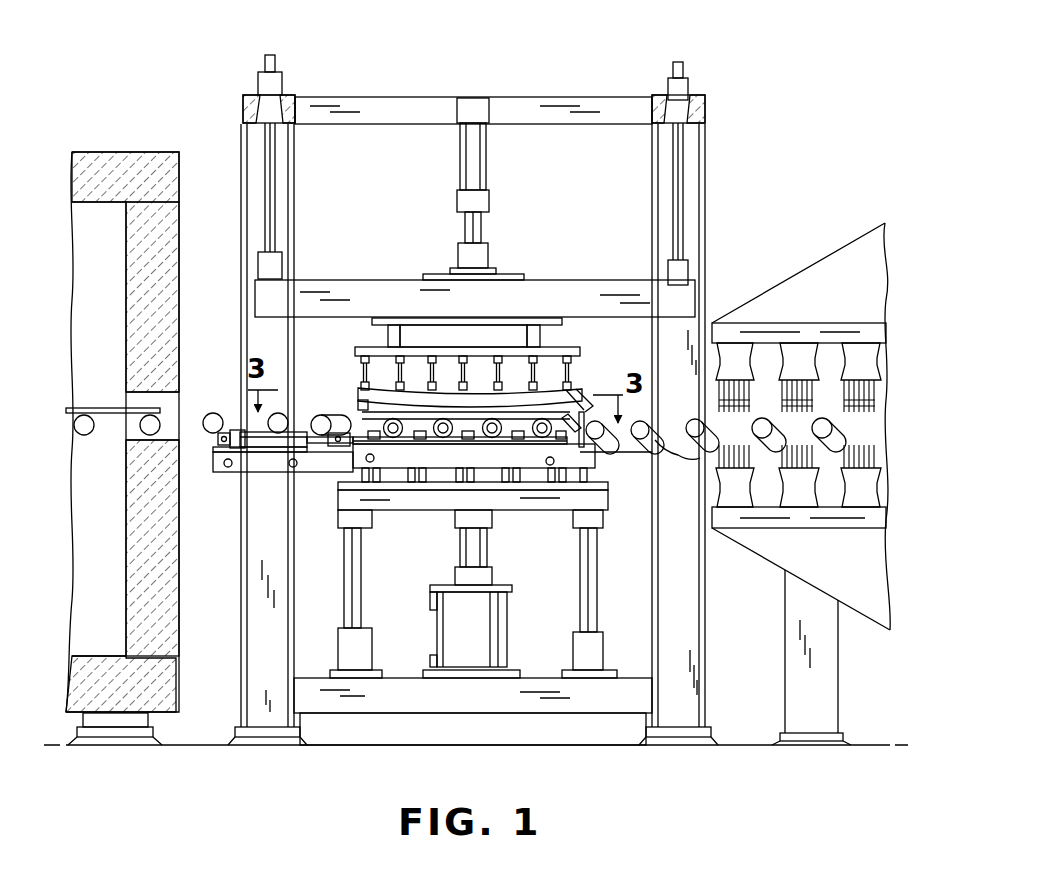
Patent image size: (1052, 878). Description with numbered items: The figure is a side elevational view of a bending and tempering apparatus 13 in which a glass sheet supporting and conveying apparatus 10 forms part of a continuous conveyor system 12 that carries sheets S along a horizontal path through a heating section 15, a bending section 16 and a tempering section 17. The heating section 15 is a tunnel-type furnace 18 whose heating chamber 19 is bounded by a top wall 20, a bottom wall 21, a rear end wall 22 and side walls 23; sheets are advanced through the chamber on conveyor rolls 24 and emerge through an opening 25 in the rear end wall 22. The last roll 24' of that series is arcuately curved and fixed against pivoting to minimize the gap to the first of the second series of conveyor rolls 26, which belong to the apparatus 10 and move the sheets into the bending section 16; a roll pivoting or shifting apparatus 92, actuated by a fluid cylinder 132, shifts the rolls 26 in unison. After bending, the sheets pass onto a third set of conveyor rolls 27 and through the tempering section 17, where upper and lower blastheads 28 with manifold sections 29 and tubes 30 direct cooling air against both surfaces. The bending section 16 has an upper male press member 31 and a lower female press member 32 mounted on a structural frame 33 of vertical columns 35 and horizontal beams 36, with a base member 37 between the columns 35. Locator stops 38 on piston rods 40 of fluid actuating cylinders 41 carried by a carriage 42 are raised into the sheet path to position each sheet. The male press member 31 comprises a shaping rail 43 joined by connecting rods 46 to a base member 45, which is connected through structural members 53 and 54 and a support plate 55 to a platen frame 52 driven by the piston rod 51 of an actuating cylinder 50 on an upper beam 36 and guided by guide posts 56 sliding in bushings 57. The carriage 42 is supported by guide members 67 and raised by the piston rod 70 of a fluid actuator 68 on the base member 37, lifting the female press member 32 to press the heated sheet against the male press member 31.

The glass sheet supporting and conveying apparatus 10 is at (393, 444).
The conveyor system 12 is at (308, 407).
The bending and tempering apparatus 13 is at (187, 63).
The heating section 15 is at (100, 113).
The bending section 16 is at (518, 62).
The tempering section 17 is at (834, 190).
The tunnel-type furnace 18 is at (124, 420).
The heating chamber 19 is at (85, 255).
The top wall 20 is at (110, 157).
The bottom wall 21 is at (77, 690).
The rear end wall 22 is at (172, 245).
The side walls 23 is at (112, 590).
The conveyor rolls 24 is at (181, 429).
The last roll 24' is at (327, 380).
The opening 25 is at (173, 430).
The conveyor rolls 26 is at (420, 420).
The conveyor rolls 27 is at (645, 423).
The blastheads 28 is at (825, 268).
The manifold sections 29 is at (787, 368).
The tubes 30 is at (870, 443).
The upper male press member 31 is at (593, 365).
The lower female press member 32 is at (353, 418).
The structural frame 33 is at (570, 97).
The columns 35 is at (243, 307).
The beams 36 is at (317, 103).
The base member 37 is at (402, 708).
The locator stops 38 is at (583, 415).
The piston rod 40 is at (590, 447).
The fluid actuating cylinder 41 is at (600, 483).
The carriage 42 is at (538, 502).
The shaping rail 43 is at (475, 393).
The base member 45 is at (567, 352).
The connecting rods 46 is at (398, 366).
The actuating cylinder 50 is at (467, 142).
The piston rod 51 is at (468, 227).
The platen frame 52 is at (633, 290).
The structural member 53 is at (433, 335).
The structural member 54 is at (390, 338).
The support plate 55 is at (553, 323).
The guide posts 56 is at (273, 177).
The bushings 57 is at (263, 78).
The guide members 67 is at (350, 577).
The fluid actuator 68 is at (500, 627).
The piston rod 70 is at (467, 543).
The roll pivoting or shifting apparatus 92 is at (345, 452).
The fluid cylinder 132 is at (278, 440).